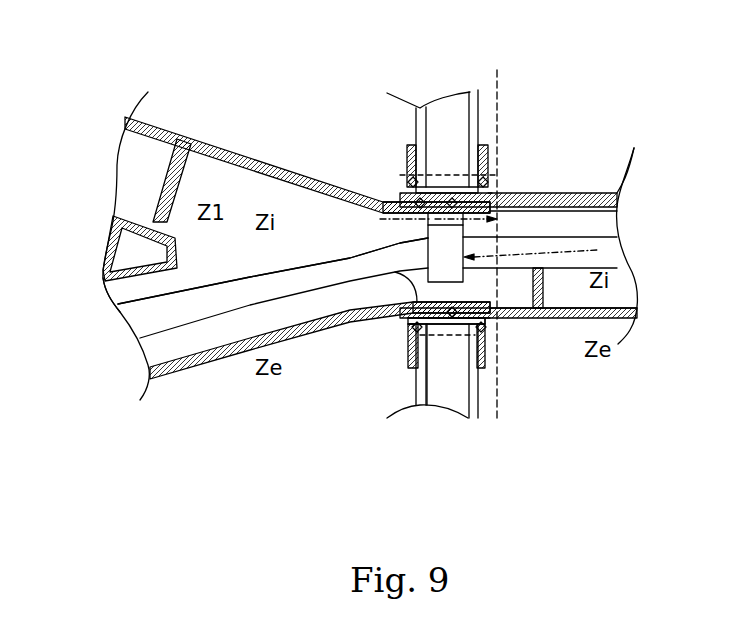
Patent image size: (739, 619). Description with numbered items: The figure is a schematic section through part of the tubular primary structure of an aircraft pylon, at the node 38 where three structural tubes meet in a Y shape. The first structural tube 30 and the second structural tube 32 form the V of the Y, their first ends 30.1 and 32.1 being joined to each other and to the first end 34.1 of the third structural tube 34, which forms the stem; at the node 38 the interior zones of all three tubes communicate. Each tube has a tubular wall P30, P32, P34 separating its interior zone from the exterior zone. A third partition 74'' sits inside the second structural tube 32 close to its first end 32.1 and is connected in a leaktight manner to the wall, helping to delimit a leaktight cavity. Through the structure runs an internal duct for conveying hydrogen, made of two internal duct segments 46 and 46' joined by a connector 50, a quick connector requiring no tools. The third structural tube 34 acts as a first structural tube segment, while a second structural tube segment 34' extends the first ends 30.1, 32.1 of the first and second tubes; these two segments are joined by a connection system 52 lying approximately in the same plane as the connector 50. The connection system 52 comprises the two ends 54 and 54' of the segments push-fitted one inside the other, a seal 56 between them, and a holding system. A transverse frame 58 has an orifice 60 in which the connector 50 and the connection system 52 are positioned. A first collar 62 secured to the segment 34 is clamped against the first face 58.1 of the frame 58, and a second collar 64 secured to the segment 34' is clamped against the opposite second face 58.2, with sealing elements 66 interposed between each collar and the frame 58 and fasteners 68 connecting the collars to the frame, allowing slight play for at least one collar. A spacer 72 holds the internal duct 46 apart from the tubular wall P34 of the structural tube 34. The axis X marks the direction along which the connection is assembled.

The first structural tube 30 is at (155, 390).
The first end of the first structural tube 30.1 is at (345, 328).
The second structural tube 32 is at (162, 112).
The first end of the second structural tube 32.1 is at (353, 195).
The third structural tube 34 is at (545, 336).
The first end of the third structural tube 34.1 is at (512, 204).
The second structural tube segment 34' is at (273, 252).
The node 38 is at (392, 330).
The internal duct segment 46 is at (592, 259).
The internal duct segment 46' is at (273, 332).
The connector 50 is at (597, 250).
The connection system 52 is at (527, 200).
The end of the structural tube segment 54 is at (418, 221).
The end of the structural tube segment 54' is at (447, 388).
The seal 56 is at (500, 323).
The transverse frame 58 is at (494, 425).
The first face of the transverse frame 58.1 is at (470, 121).
The second face of the transverse frame 58.2 is at (409, 122).
The orifice 60 is at (444, 183).
The first collar 62 is at (507, 177).
The second collar 64 is at (413, 143).
The sealing elements 66 is at (407, 187).
The fasteners 68 is at (490, 194).
The spacer 72 is at (545, 305).
The third partition 74'' is at (120, 180).
The tubular wall P30 is at (104, 263).
The tubular wall P32 is at (110, 232).
The tubular wall P34 is at (602, 205).
The axis X is at (540, 80).